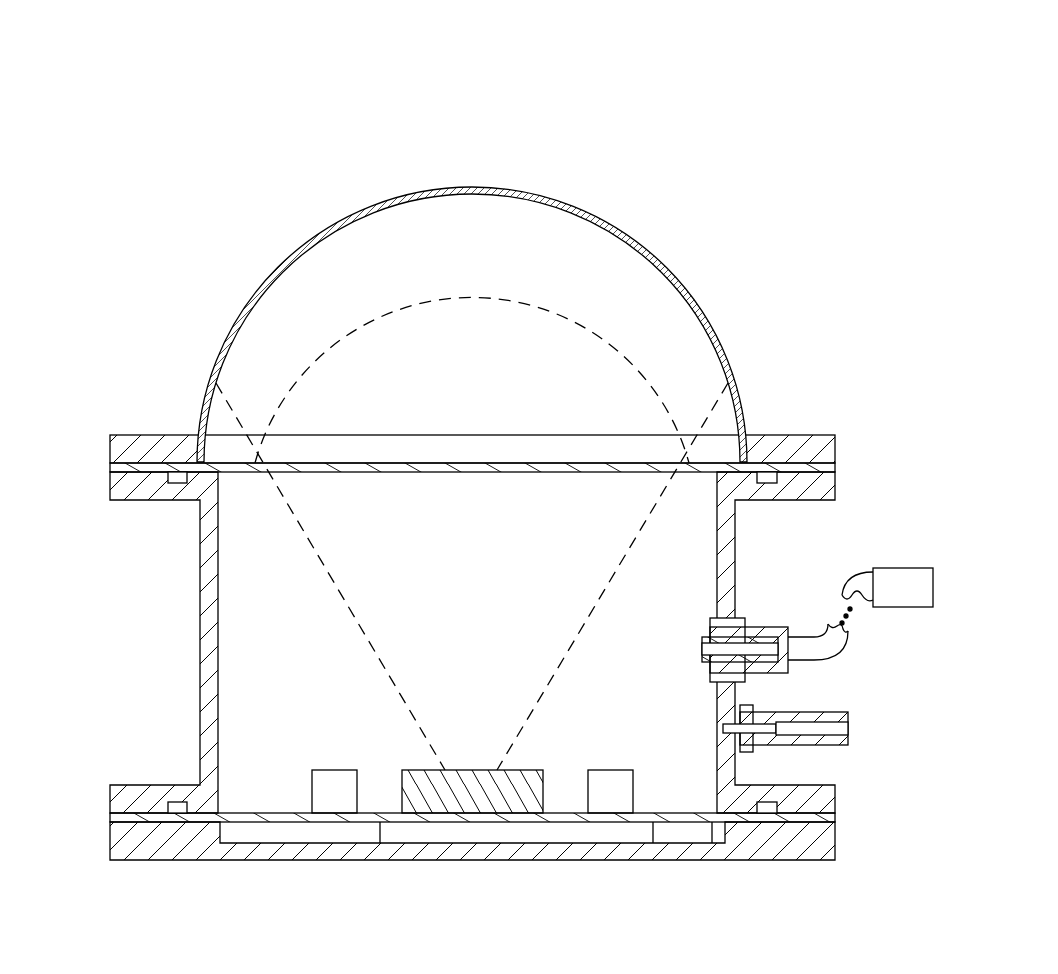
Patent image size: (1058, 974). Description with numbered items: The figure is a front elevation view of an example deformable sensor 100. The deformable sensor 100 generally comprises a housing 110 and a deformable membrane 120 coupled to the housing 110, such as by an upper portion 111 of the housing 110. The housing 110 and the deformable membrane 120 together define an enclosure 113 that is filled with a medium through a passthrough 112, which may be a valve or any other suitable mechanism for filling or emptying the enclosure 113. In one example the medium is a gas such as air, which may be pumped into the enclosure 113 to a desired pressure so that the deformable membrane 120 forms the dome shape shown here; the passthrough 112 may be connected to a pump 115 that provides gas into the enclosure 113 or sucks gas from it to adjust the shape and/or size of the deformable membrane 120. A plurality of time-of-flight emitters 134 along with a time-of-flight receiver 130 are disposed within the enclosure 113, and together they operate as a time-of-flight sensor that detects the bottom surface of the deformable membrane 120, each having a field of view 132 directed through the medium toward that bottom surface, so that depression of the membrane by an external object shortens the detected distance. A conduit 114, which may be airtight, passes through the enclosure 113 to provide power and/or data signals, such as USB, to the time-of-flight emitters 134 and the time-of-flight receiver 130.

The deformable sensor 100 is at (249, 110).
The housing 110 is at (470, 618).
The upper portion of the housing 111 is at (140, 435).
The passthrough 112 is at (782, 606).
The enclosure 113 is at (229, 635).
The conduit 114 is at (836, 694).
The pump 115 is at (903, 568).
The deformable membrane 120 is at (674, 236).
The time-of-flight receiver 130 is at (545, 795).
The field of view 132 is at (366, 627).
The time-of-flight emitters 134 is at (333, 770).